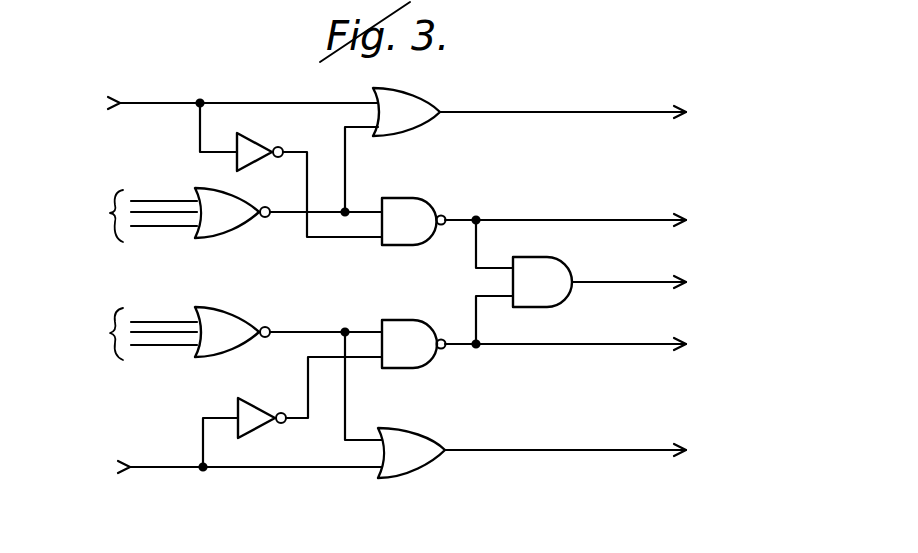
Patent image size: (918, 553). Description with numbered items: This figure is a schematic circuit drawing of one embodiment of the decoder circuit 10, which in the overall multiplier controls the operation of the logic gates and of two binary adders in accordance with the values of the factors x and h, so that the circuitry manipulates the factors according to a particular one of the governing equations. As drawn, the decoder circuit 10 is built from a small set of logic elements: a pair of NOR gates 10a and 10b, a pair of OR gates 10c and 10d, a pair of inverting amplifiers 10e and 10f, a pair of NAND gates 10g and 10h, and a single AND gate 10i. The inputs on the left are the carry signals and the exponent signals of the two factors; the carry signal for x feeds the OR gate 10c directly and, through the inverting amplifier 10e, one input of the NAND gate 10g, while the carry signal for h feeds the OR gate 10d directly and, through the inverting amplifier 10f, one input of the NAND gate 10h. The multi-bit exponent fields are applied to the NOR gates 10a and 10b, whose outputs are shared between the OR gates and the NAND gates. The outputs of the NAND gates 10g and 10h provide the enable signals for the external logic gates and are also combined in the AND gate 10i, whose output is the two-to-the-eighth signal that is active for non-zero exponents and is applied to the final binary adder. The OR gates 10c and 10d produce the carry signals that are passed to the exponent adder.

The decoder circuit 10 is at (616, 72).
The NOR gate 10a is at (232, 226).
The NOR gate 10b is at (233, 323).
The OR gate 10c is at (421, 106).
The OR gate 10d is at (420, 455).
The inverting amplifier 10e is at (250, 151).
The inverting amplifier 10f is at (252, 422).
The NAND gate 10g is at (412, 212).
The NAND gate 10h is at (424, 355).
The AND gate 10i is at (567, 290).